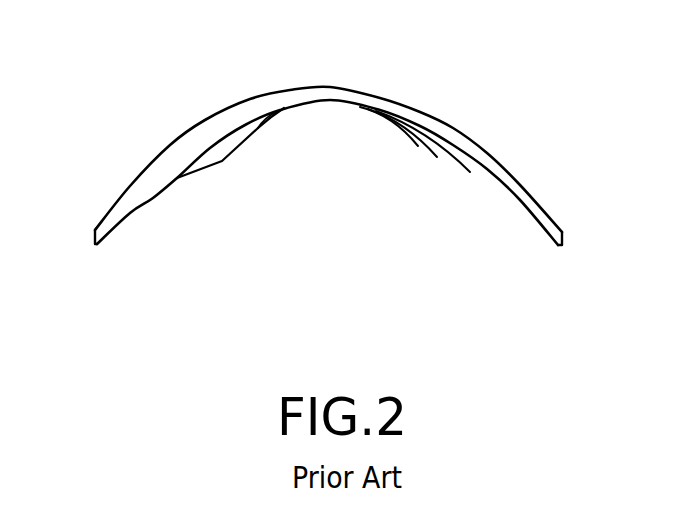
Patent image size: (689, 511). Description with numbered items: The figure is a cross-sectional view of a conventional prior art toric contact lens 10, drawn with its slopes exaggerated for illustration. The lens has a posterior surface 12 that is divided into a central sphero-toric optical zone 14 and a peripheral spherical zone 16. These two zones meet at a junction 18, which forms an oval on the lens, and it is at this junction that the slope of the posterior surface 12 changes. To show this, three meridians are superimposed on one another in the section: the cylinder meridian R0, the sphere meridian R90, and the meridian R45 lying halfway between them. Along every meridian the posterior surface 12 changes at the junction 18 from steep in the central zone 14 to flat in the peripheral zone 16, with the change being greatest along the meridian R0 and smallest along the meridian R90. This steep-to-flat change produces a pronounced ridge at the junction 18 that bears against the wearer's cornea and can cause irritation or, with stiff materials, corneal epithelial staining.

The toric contact lens 10 is at (117, 98).
The posterior surface 12 is at (108, 233).
The central sphero-toric optical zone 14 is at (258, 128).
The peripheral spherical zone 16 is at (158, 195).
The junction 18 is at (222, 161).
The cylinder meridian R0 is at (414, 154).
The meridian halfway between the cylinder and sphere meridians R45 is at (431, 164).
The sphere meridian R90 is at (465, 182).